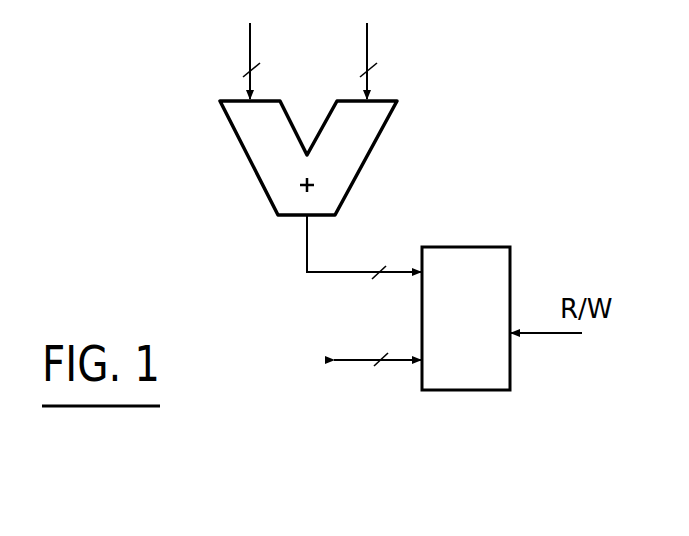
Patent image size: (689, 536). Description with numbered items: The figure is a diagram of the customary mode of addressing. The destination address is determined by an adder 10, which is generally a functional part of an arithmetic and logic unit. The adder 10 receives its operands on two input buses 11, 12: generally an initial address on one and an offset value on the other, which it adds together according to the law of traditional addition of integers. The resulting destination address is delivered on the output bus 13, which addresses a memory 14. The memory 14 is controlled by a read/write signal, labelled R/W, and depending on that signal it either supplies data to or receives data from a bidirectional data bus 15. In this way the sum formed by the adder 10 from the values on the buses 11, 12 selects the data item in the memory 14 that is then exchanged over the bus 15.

The adder 10 is at (375, 140).
The bus 11 is at (250, 37).
The bus 12 is at (367, 45).
The output bus 13 is at (307, 245).
The memory 14 is at (488, 247).
The bus 15 is at (357, 362).